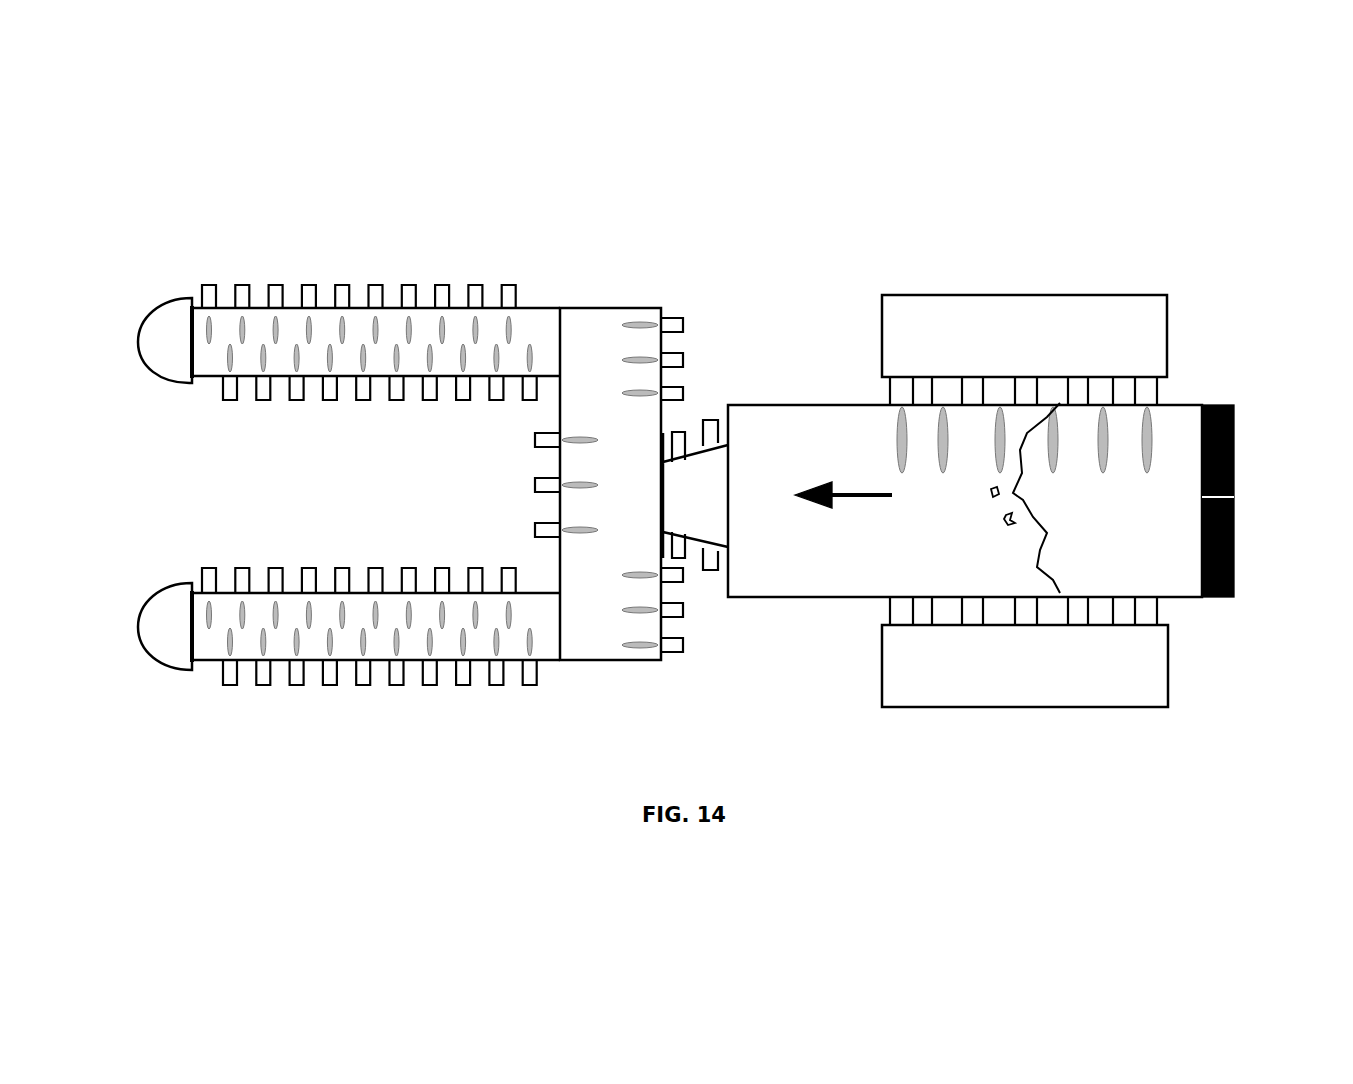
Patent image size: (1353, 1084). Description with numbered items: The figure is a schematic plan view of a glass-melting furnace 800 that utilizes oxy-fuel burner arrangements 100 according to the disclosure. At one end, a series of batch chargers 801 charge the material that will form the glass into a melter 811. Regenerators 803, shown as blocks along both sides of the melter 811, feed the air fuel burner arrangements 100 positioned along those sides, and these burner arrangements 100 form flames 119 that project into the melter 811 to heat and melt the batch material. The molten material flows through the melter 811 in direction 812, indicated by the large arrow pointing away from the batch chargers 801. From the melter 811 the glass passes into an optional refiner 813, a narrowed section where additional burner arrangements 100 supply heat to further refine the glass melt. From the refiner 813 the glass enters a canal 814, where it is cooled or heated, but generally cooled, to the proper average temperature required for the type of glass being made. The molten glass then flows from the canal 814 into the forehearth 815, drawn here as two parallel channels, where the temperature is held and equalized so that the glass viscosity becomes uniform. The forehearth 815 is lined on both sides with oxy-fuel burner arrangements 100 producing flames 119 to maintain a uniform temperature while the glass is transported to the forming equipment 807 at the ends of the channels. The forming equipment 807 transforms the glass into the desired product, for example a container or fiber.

The glass-melting furnace 800 is at (734, 152).
The forming equipment 807 is at (170, 310).
The oxy-fuel burner arrangement 100 is at (273, 288).
The flame 119 is at (530, 340).
The refiner 813 is at (708, 596).
The canal 814 is at (606, 664).
The forehearth 815 is at (364, 701).
The direction 812 is at (845, 497).
The melter 811 is at (1198, 620).
The regenerator 803 is at (1035, 310).
The batch charger 801 is at (1218, 405).